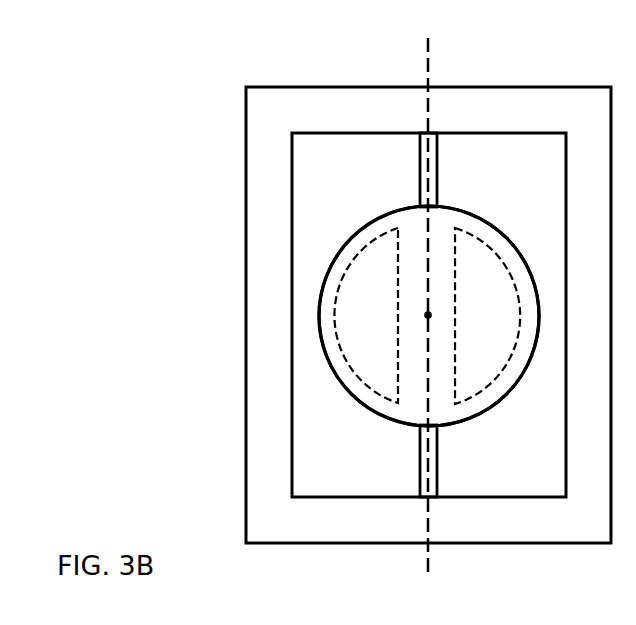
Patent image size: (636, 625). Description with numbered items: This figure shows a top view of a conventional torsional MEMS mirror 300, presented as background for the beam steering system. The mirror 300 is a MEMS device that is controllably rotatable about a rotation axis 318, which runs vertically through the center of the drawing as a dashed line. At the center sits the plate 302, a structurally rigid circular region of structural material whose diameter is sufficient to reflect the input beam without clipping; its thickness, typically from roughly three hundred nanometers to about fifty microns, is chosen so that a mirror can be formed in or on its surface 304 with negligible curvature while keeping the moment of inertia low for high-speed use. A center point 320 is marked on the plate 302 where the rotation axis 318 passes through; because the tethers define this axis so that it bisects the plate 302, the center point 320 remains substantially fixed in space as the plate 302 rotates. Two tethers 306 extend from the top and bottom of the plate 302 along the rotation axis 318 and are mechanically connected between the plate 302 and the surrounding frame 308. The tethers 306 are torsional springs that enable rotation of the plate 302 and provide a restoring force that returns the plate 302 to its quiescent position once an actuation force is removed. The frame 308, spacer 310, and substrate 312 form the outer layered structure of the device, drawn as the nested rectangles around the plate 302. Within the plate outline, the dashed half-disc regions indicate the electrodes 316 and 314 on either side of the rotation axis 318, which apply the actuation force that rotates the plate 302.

The mirror 300 is at (131, 187).
The plate 302 is at (452, 207).
The surface 304 is at (428, 378).
The tethers 306 is at (420, 152).
The frame 308 is at (320, 315).
The spacer 310 is at (320, 315).
The substrate 312 is at (246, 427).
The electrode 314 is at (508, 328).
The electrode 316 is at (390, 328).
The rotation axis 318 is at (428, 57).
The center point 320 is at (428, 315).